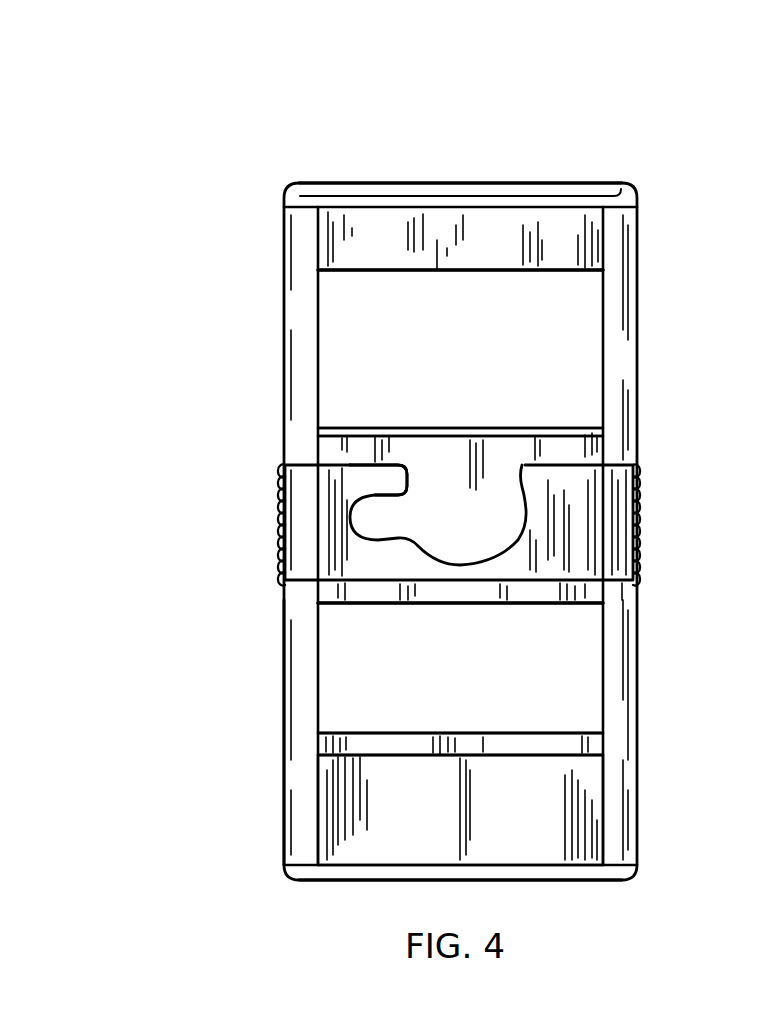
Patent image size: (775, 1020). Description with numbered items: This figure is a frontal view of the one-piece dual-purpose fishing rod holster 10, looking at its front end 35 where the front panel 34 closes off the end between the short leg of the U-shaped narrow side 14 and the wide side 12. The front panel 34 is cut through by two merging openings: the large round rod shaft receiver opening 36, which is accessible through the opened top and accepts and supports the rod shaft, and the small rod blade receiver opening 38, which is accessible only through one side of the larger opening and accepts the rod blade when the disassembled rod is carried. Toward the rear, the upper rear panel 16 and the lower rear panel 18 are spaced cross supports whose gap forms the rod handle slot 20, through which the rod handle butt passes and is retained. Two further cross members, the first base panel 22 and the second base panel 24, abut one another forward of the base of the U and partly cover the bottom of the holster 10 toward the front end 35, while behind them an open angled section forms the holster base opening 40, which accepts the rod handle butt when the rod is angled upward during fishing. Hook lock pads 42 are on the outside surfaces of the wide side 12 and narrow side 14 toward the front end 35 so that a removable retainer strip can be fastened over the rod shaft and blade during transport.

The dual-purpose fishing rod holster 10 is at (283, 168).
The wide side 12 is at (617, 312).
The narrow side 14 is at (283, 715).
The upper rear panel 16 is at (520, 187).
The lower rear panel 18 is at (510, 455).
The rod handle slot 20 is at (358, 324).
The first base panel 22 is at (520, 745).
The second base panel 24 is at (545, 810).
The front panel 34 is at (585, 571).
The front end 35 is at (484, 884).
The rod shaft receiver opening 36 is at (456, 568).
The rod blade receiver opening 38 is at (351, 492).
The holster base opening 40 is at (567, 652).
The hook lock pads 42 is at (278, 555).